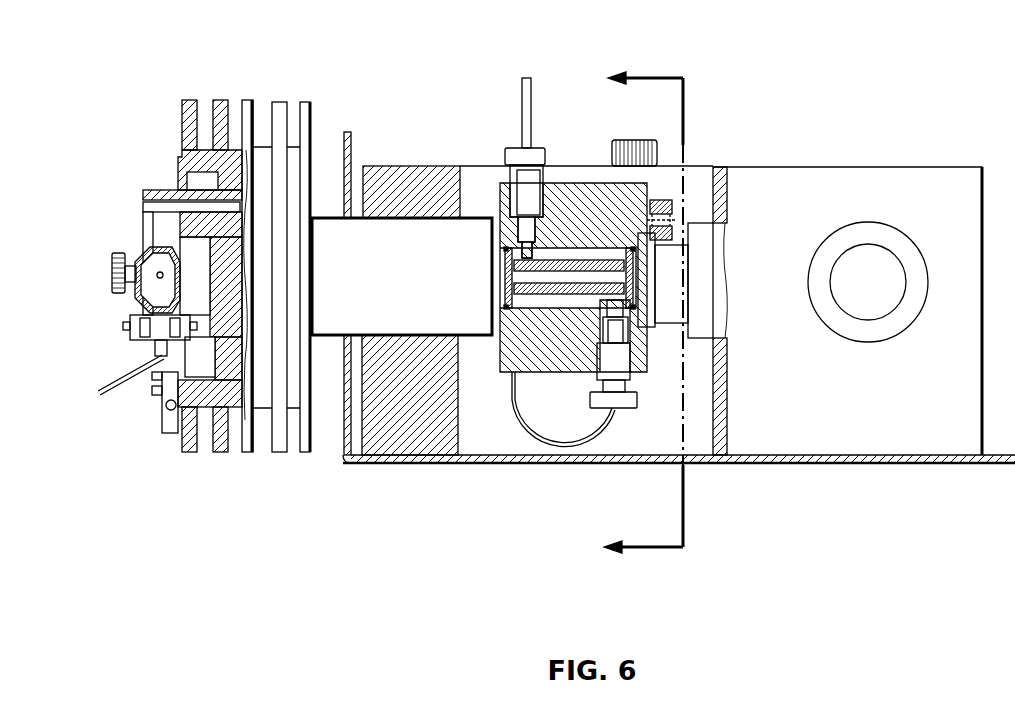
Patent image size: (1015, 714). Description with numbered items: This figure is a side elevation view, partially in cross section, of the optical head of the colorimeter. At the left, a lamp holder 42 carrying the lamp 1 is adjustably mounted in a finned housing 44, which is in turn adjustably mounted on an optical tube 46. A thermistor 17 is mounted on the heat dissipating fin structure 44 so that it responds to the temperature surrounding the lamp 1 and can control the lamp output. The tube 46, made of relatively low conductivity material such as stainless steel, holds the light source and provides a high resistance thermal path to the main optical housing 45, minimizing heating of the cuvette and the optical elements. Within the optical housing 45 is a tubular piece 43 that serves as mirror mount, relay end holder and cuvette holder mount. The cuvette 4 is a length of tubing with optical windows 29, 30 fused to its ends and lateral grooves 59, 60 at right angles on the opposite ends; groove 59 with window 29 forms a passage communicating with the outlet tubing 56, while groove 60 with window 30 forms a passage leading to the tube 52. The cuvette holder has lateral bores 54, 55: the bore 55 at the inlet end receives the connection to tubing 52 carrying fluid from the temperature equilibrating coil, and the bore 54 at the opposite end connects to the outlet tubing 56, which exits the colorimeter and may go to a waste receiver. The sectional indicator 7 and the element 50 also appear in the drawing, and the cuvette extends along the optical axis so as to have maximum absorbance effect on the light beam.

The lamp 1 is at (152, 285).
The cuvette 4 is at (578, 280).
The section line 7- 7 is at (643, 313).
The thermistor 17 is at (167, 410).
The optical window 29 is at (512, 293).
The optical window 30 is at (625, 286).
The lamp holder 42 is at (145, 190).
The tubular piece 43 is at (676, 260).
The finned housing 44 is at (197, 100).
The optical housing 45 is at (406, 165).
The optical tube 46 is at (327, 215).
The housing with aperture 50 is at (925, 305).
The outlet tube 52 is at (613, 408).
The lateral bore 54 is at (545, 235).
The lateral bore 55 is at (628, 318).
The outlet tubing 56 is at (521, 93).
The lateral groove 59 is at (516, 271).
The lateral groove 60 is at (612, 288).